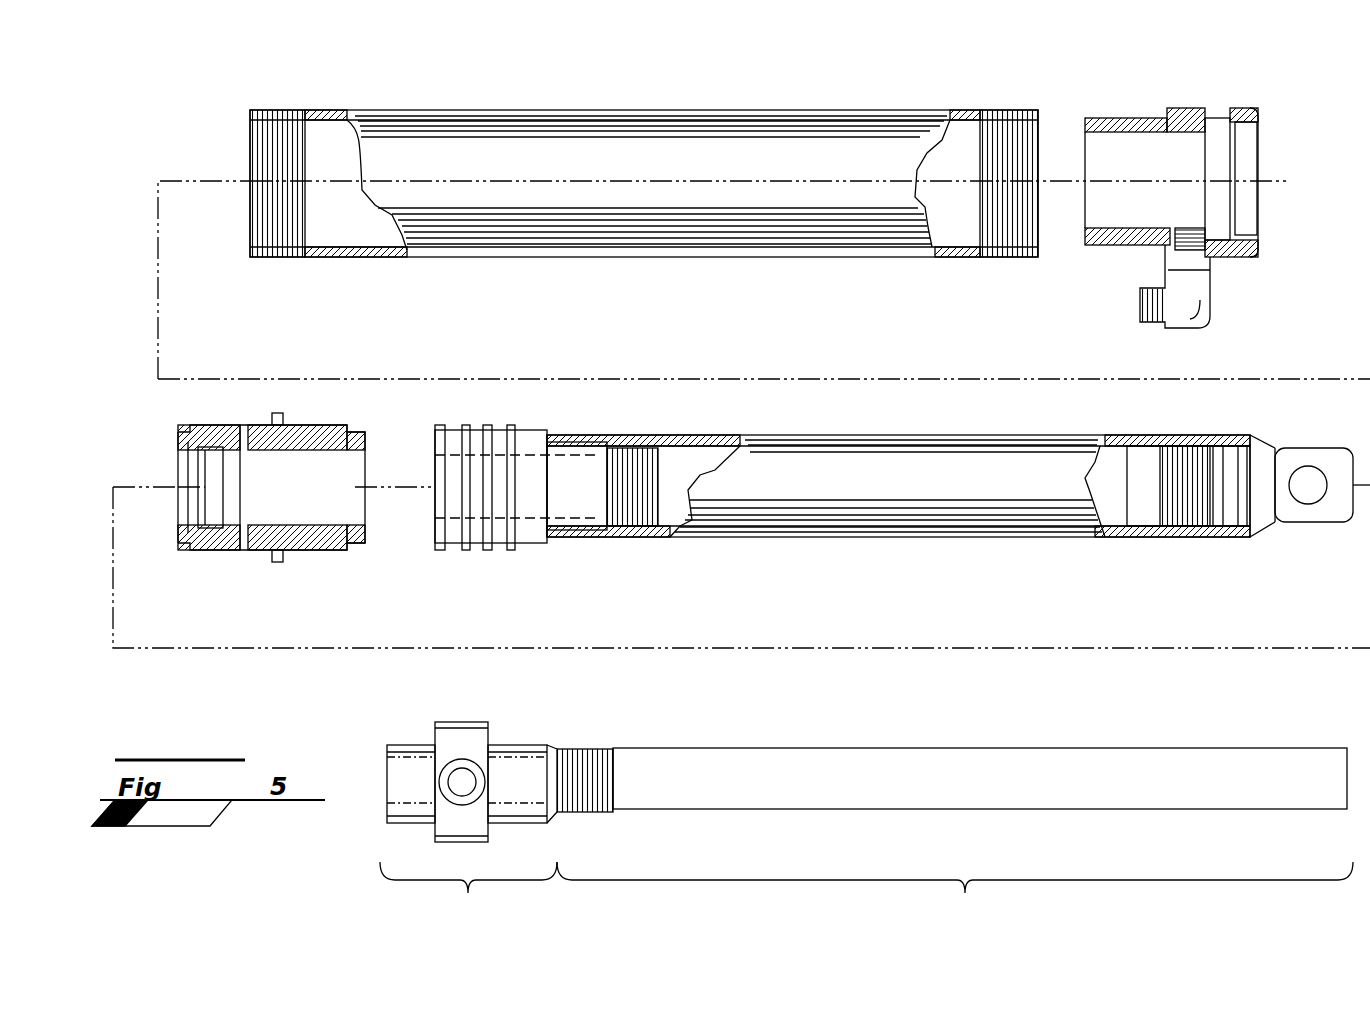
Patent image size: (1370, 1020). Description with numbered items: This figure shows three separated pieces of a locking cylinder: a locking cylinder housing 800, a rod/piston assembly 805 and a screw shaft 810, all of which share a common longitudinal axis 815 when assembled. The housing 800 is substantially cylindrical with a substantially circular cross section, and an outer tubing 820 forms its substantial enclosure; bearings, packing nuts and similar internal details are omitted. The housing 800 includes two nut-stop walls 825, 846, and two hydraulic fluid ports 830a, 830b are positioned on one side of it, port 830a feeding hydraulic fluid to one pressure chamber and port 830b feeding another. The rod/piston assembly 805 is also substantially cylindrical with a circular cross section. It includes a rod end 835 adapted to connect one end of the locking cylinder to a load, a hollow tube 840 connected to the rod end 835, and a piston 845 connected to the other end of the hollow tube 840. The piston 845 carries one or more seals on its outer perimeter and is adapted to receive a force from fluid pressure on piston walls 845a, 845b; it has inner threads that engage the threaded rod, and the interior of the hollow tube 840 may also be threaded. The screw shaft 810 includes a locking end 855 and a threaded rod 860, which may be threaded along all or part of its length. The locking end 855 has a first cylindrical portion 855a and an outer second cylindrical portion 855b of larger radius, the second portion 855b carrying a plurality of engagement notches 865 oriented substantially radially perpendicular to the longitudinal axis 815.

The locking cylinder housing 800 is at (644, 153).
The rod/piston assembly 805 is at (950, 461).
The screw shaft 810 is at (758, 748).
The longitudinal axis 815 is at (165, 172).
The outer tubing 820 is at (858, 177).
The nut-stop wall 825 is at (310, 495).
The hydraulic fluid port 830a is at (240, 553).
The hydraulic fluid port 830b is at (1140, 305).
The rod end 835 is at (1345, 455).
The hollow tube 840 is at (912, 490).
The piston 845 is at (490, 436).
The piston wall 845a is at (455, 425).
The piston wall 845b is at (555, 437).
The nut-stop wall 846 is at (1085, 118).
The locking end 855 is at (454, 792).
The first cylindrical portion 855a is at (392, 742).
The outer second cylindrical portion 855b is at (488, 745).
The threaded rod 860 is at (955, 893).
The engagement notches 865 is at (462, 722).